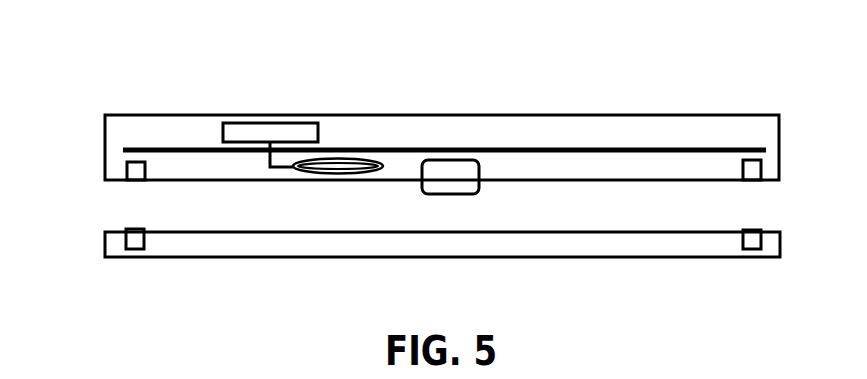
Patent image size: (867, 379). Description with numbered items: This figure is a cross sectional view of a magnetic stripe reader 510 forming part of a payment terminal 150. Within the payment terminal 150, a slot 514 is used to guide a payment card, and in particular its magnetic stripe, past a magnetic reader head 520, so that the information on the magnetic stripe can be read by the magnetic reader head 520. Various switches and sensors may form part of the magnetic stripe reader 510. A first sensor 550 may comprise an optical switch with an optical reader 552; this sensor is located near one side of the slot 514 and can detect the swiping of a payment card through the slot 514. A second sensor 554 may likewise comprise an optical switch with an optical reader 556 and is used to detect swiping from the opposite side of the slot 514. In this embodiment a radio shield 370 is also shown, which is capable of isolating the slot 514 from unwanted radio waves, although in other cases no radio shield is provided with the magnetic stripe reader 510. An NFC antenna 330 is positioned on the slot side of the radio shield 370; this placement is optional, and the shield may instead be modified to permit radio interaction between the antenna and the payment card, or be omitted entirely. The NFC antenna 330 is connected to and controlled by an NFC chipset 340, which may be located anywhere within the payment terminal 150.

The payment terminal 150 is at (741, 77).
The slot 514 is at (110, 197).
The magnetic stripe reader 510 is at (627, 247).
The radio shield 370 is at (590, 148).
The NFC chipset 340 is at (272, 132).
The NFC antenna 330 is at (368, 165).
The magnetic reader head 520 is at (445, 180).
The first sensor 550 is at (133, 172).
The second sensor 554 is at (750, 170).
The optical reader 552 is at (137, 245).
The optical reader 556 is at (755, 245).